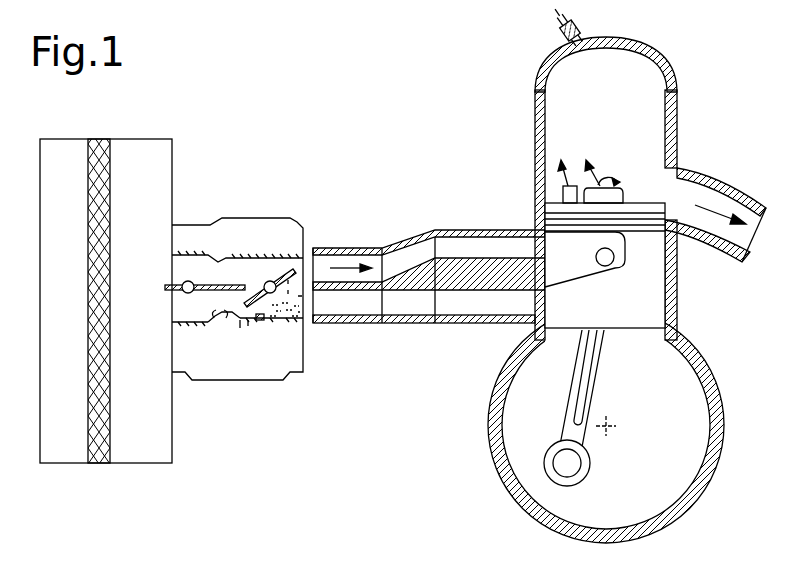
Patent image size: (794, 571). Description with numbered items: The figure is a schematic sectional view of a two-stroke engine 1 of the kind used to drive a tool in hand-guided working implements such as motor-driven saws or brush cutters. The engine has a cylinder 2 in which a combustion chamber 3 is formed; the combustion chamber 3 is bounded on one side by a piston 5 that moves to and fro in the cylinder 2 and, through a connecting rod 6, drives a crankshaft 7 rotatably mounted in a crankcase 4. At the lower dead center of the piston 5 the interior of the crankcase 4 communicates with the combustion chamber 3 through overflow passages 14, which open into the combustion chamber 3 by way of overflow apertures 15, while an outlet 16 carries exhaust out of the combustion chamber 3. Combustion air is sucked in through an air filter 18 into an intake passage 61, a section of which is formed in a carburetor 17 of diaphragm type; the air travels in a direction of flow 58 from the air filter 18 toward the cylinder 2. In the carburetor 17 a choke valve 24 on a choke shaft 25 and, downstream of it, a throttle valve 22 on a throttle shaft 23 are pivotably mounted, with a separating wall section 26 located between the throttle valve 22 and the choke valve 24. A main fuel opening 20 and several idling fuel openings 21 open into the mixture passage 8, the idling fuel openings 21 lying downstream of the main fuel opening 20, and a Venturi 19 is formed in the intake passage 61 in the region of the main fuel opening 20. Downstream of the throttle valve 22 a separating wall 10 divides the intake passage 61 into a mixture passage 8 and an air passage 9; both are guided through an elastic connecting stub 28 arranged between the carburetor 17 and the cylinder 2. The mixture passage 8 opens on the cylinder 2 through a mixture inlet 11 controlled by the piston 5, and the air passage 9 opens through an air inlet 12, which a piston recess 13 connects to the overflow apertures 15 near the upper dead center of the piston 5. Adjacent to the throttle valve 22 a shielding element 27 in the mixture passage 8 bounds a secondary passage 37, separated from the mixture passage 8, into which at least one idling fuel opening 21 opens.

The two-stroke engine 1 is at (732, 136).
The cylinder 2 is at (673, 120).
The combustion chamber 3 is at (557, 102).
The crankcase 4 is at (503, 478).
The piston 5 is at (652, 293).
The connecting rod 6 is at (567, 408).
The crankshaft 7 is at (612, 428).
The mixture passage 8 is at (445, 308).
The air passage 9 is at (523, 250).
The separating wall 10 is at (328, 291).
The mixture inlet 11 is at (525, 326).
The air inlet 12 is at (530, 230).
The piston recess 13 is at (580, 268).
The overflow passage 14 is at (562, 196).
The overflow aperture 15 is at (578, 190).
The outlet 16 is at (746, 240).
The carburetor 17 is at (280, 360).
The air filter 18 is at (110, 478).
The Venturi 19 is at (212, 245).
The main fuel opening 20 is at (222, 314).
The idling fuel opening 21 is at (262, 322).
The throttle valve 22 is at (284, 283).
The throttle shaft 23 is at (268, 282).
The choke valve 24 is at (160, 284).
The choke shaft 25 is at (185, 296).
The separating wall section 26 is at (238, 316).
The shielding element 27 is at (310, 323).
The connecting stub 28 is at (405, 240).
The secondary passage 37 is at (299, 322).
The direction of flow 58 is at (342, 255).
The intake passage 61 is at (228, 260).